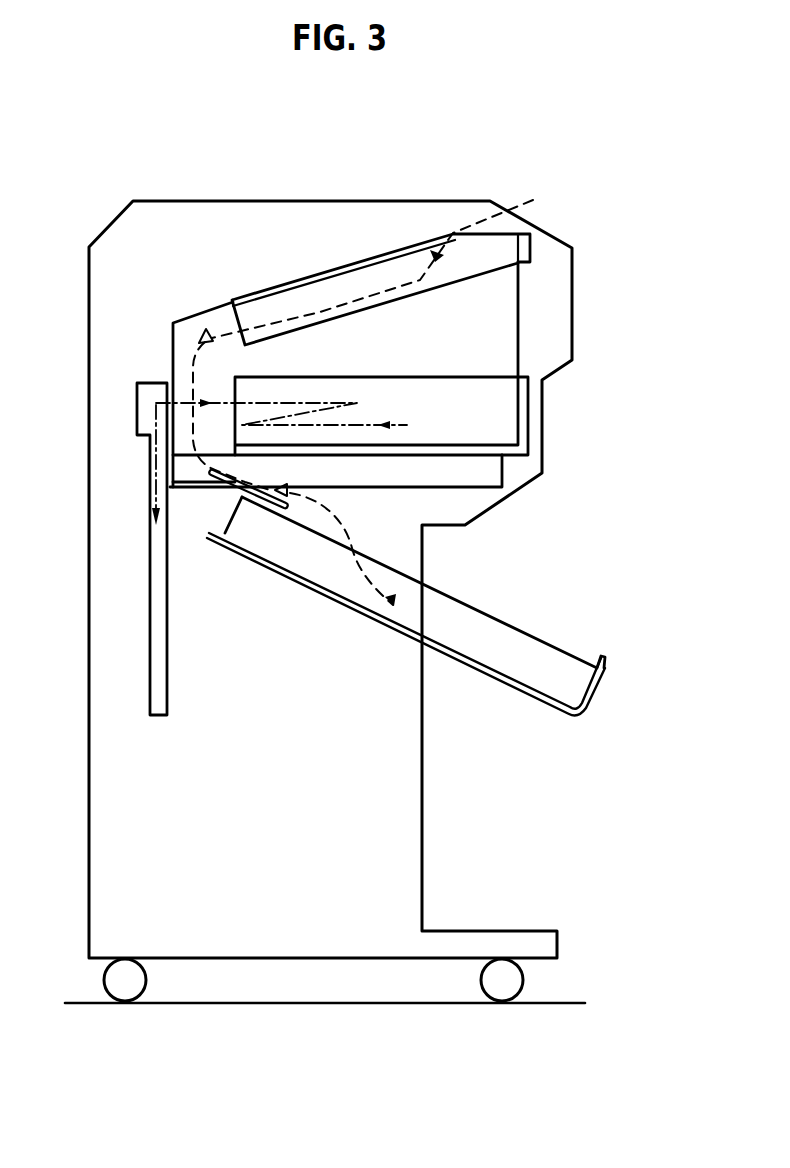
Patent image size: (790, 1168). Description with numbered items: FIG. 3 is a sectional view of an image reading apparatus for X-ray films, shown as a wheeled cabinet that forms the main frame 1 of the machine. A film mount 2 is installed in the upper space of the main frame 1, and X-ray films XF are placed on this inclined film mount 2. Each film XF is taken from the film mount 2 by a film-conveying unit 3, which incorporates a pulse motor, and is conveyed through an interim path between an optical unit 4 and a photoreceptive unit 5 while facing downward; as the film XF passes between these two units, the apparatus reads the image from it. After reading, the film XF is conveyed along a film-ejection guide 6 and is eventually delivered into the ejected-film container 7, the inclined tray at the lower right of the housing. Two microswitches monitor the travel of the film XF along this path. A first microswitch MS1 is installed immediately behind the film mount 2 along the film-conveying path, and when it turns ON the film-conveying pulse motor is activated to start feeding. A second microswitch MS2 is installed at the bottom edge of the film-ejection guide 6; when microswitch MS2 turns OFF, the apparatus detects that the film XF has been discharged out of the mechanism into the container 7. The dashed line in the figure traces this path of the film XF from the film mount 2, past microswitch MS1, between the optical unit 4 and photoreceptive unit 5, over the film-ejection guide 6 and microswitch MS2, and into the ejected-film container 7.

The copying machine main body 1 is at (560, 940).
The film mount 2 is at (535, 247).
The film-conveying unit 3 is at (187, 365).
The optical unit 4 is at (530, 410).
The photoreceptive unit 5 is at (138, 417).
The film-ejection guide 6 is at (275, 490).
The ejected-film container 7 is at (513, 637).
The X-ray film XF is at (370, 293).
The microswitch MS1 is at (207, 330).
The microswitch MS2 is at (283, 497).